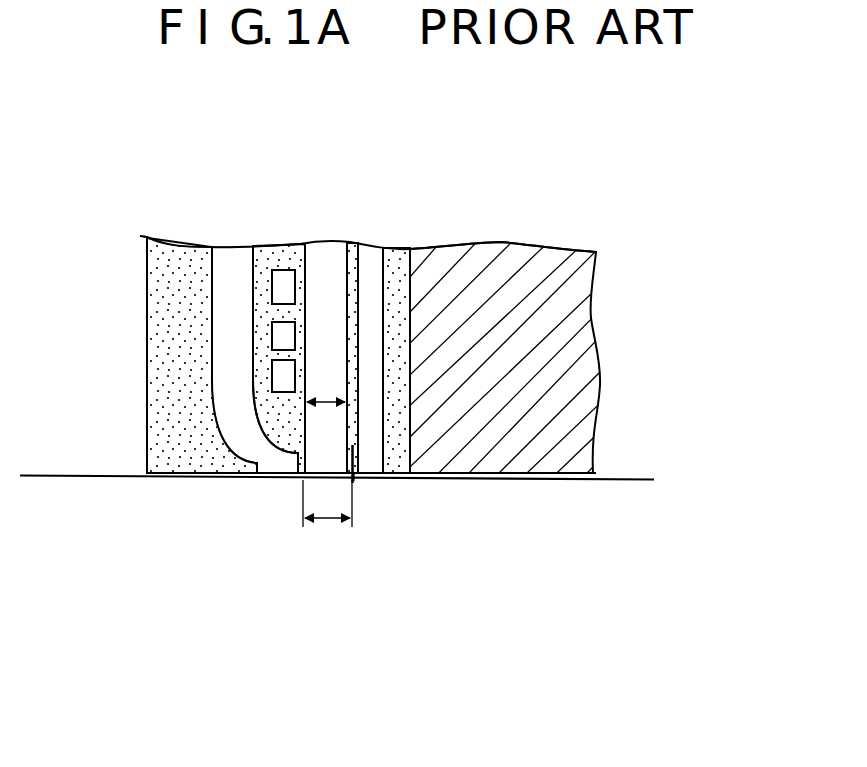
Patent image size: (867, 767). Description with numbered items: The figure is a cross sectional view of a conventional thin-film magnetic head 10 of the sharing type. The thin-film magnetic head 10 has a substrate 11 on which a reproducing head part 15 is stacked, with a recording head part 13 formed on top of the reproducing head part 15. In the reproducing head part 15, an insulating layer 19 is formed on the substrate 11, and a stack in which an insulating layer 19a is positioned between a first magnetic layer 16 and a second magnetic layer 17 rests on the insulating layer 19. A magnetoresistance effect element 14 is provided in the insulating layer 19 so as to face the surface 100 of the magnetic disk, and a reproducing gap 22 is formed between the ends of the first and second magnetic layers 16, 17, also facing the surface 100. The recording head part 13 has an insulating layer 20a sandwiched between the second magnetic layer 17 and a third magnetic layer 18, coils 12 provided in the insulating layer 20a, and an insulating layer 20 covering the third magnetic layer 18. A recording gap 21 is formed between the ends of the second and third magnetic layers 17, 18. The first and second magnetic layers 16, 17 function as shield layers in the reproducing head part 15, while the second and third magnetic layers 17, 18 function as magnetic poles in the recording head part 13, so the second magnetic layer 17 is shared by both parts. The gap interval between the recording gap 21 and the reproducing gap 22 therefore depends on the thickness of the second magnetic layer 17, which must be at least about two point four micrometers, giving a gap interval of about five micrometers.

The thin-film magnetic head 10 is at (476, 117).
The substrate 11 is at (585, 342).
The coils 12 is at (280, 250).
The recording head part 13 is at (279, 487).
The magnetoresistance effect element 14 is at (356, 455).
The reproducing head part 15 is at (358, 490).
The first magnetic layer 16 is at (372, 253).
The second magnetic layer 17 is at (322, 256).
The third magnetic layer 18 is at (227, 260).
The insulating layer 19 is at (403, 248).
The insulating layer 19a is at (353, 252).
The insulating layer 20 is at (163, 290).
The insulating layer 20a is at (268, 258).
The recording gap 21 is at (297, 480).
The reproducing gap 22 is at (353, 480).
The surface of the magnetic disk 100 is at (617, 476).